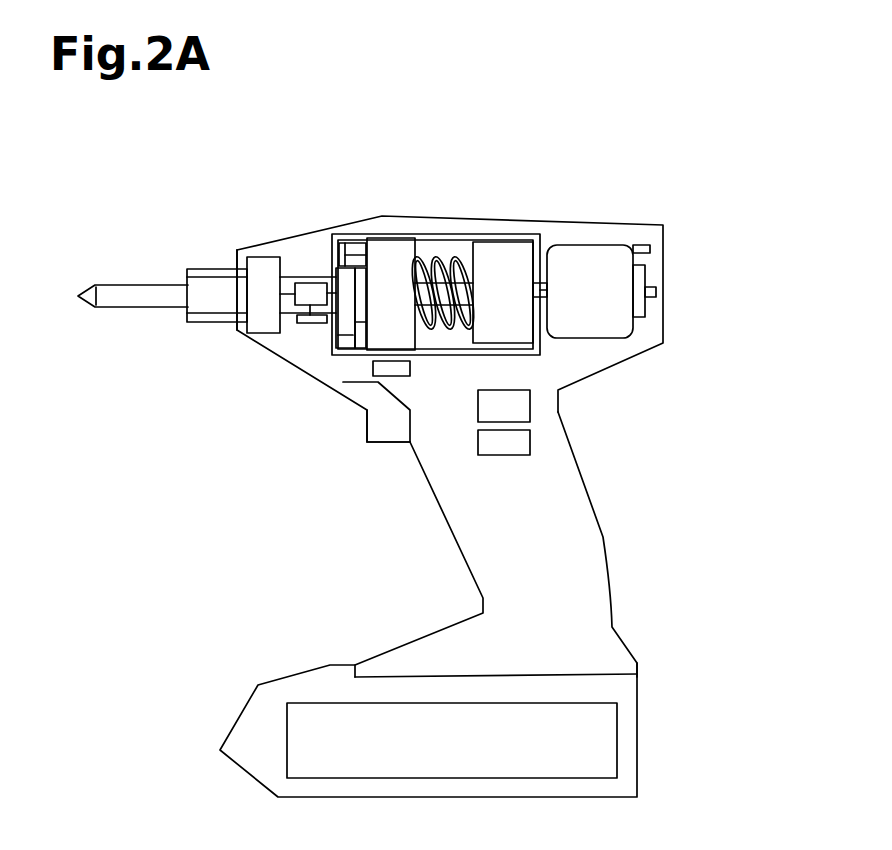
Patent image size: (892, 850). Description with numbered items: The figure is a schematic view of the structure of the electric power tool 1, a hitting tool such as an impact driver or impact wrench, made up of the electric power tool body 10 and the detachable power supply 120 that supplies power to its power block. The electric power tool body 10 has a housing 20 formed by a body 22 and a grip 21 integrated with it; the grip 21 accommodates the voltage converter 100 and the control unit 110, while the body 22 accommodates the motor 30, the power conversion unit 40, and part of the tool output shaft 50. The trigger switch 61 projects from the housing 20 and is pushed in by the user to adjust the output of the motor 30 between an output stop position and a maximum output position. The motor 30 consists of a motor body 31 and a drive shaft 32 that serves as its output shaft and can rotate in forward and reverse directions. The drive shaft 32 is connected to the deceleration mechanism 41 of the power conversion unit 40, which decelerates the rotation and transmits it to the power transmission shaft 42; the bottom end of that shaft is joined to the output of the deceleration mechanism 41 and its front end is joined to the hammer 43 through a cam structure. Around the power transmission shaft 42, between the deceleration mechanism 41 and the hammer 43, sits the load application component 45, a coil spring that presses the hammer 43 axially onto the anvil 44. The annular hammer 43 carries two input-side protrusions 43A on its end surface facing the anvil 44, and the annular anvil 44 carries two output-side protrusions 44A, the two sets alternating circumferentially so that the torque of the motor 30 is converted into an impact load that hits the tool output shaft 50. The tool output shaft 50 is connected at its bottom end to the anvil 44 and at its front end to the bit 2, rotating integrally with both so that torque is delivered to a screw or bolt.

The electric power tool 1 is at (130, 182).
The bit 2 is at (120, 308).
The electric power tool body 10 is at (688, 228).
The housing 20 is at (663, 320).
The grip 21 is at (452, 545).
The body 22 is at (250, 244).
The motor 30 is at (605, 345).
The motor body 31 is at (583, 245).
The drive shaft 32 is at (548, 293).
The power conversion unit 40 is at (528, 193).
The deceleration mechanism 41 is at (500, 242).
The power transmission shaft 42 is at (445, 257).
The hammer 43 is at (405, 240).
The input-side protrusions 43A is at (355, 243).
The anvil 44 is at (337, 320).
The output-side protrusions 44A is at (345, 345).
The load application component 45 is at (453, 323).
The tool output shaft 50 is at (292, 268).
The trigger switch 61 is at (385, 446).
The voltage converter 100 is at (515, 457).
The control unit 110 is at (533, 405).
The power supply 120 is at (640, 688).